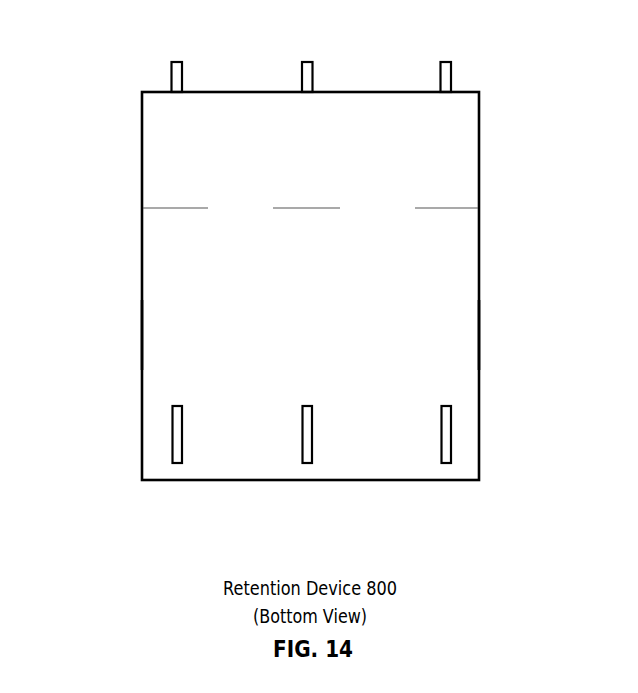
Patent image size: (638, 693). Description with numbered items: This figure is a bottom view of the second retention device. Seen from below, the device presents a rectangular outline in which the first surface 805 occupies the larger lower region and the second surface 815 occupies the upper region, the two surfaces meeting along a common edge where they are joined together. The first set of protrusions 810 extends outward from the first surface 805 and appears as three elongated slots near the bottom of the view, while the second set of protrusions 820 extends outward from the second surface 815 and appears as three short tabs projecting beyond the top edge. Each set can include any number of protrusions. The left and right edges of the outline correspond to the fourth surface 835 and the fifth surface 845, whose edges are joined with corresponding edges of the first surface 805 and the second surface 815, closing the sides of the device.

The first surface 805 is at (325, 286).
The first set of protrusions 810 is at (441, 464).
The second surface 815 is at (325, 160).
The second set of protrusions 820 is at (441, 61).
The fourth surface 835 is at (137, 333).
The fifth surface 845 is at (492, 337).